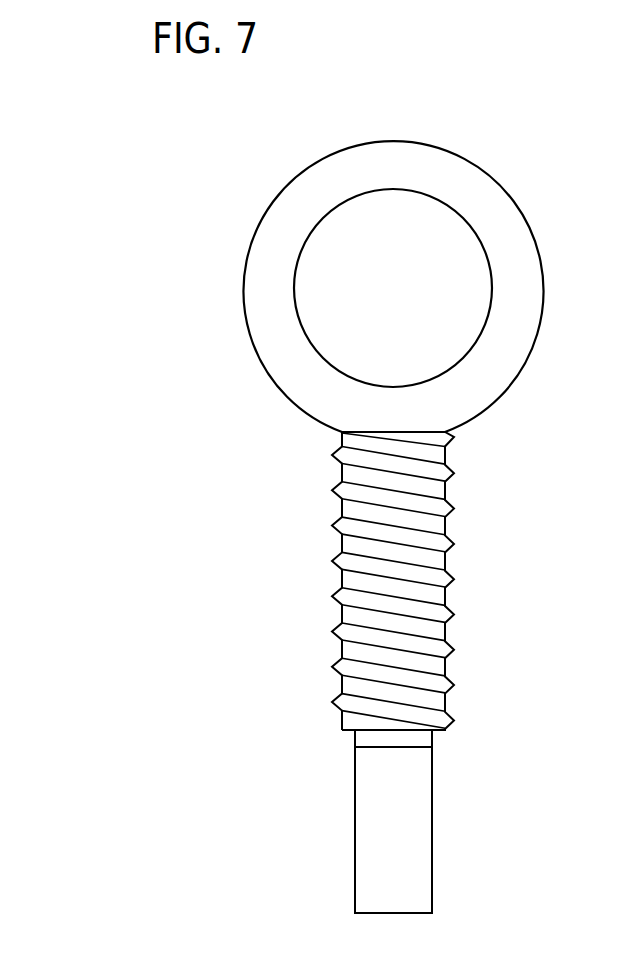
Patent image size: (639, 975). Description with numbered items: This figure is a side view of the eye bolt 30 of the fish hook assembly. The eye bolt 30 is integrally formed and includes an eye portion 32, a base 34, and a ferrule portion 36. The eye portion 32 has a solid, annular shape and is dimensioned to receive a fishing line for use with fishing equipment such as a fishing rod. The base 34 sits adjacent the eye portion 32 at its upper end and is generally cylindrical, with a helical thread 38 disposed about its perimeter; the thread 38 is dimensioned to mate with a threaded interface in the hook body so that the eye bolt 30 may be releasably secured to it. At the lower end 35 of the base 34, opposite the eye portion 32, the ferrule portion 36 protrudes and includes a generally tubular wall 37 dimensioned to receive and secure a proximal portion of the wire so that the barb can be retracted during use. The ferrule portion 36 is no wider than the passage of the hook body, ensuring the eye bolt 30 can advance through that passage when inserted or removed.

The eye bolt 30 is at (285, 183).
The eye portion 32 is at (530, 310).
The base 34 is at (342, 548).
The lower end 35 is at (348, 733).
The ferrule portion 36 is at (355, 827).
The tubular wall 37 is at (422, 777).
The helical thread 38 is at (458, 578).